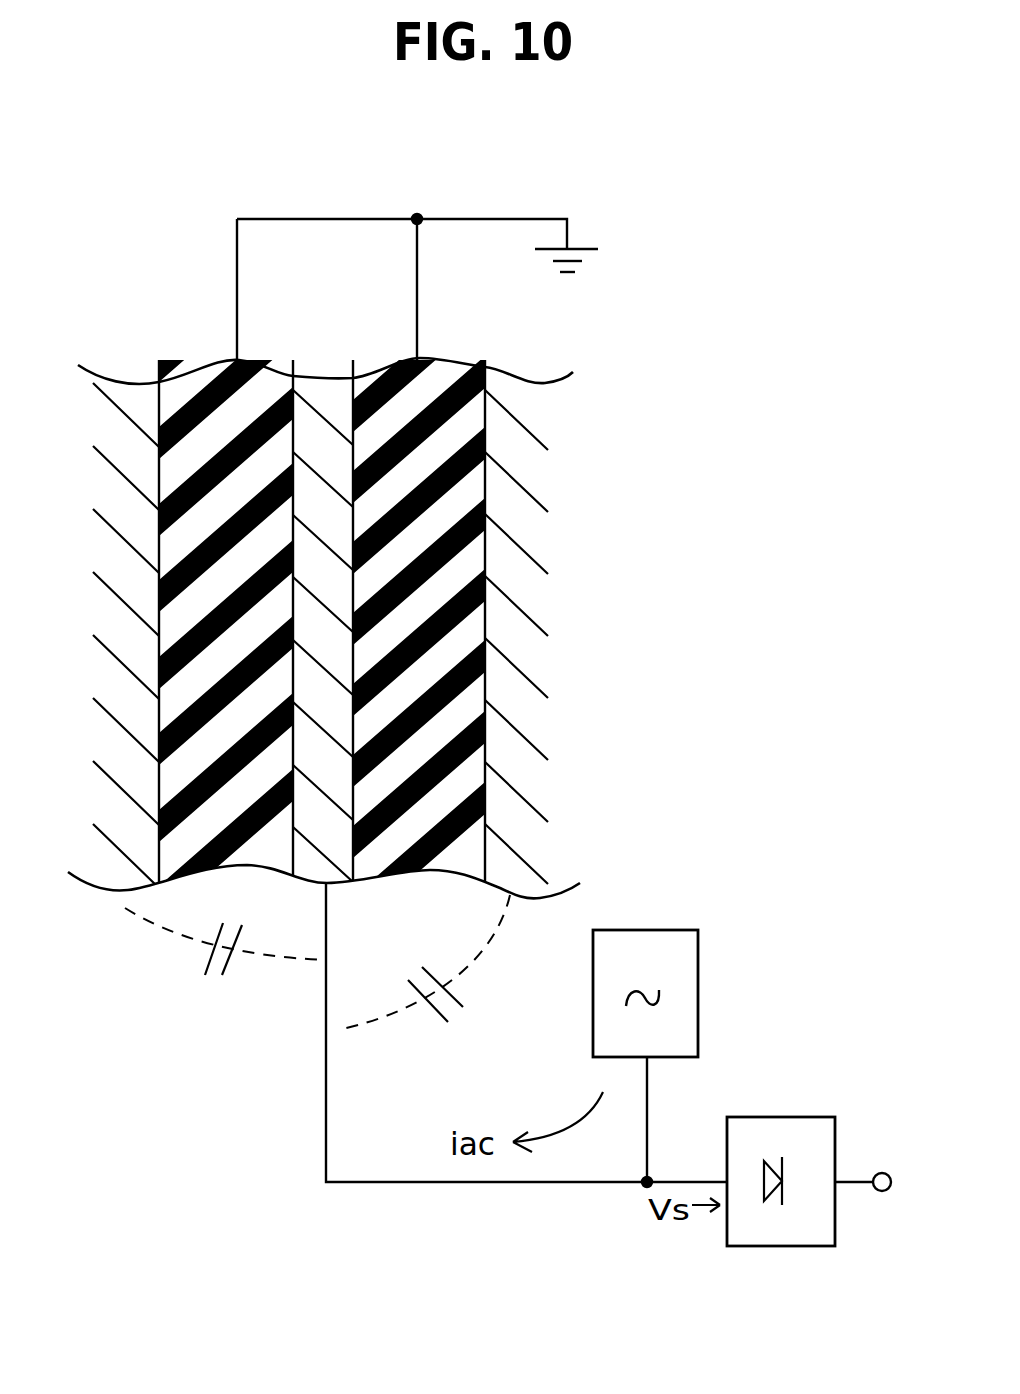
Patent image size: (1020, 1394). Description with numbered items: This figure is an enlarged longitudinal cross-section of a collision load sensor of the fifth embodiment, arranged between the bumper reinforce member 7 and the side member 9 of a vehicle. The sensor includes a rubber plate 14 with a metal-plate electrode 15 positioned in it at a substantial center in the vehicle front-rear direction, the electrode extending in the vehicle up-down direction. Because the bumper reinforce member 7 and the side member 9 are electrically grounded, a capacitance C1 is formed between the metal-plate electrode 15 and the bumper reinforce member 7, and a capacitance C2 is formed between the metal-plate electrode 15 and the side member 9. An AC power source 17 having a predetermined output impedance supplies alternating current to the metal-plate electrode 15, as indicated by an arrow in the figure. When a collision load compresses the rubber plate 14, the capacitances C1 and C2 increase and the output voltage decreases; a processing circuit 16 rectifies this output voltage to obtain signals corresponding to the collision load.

The bumper reinforce member 7 is at (95, 430).
The side member 9 is at (533, 582).
The rubber plate 14 is at (217, 383).
The metal-plate electrode 15 is at (315, 397).
The processing circuit 16 is at (785, 1233).
The AC power source 17 is at (698, 977).
The capacitance C1 is at (225, 967).
The capacitance C2 is at (424, 978).